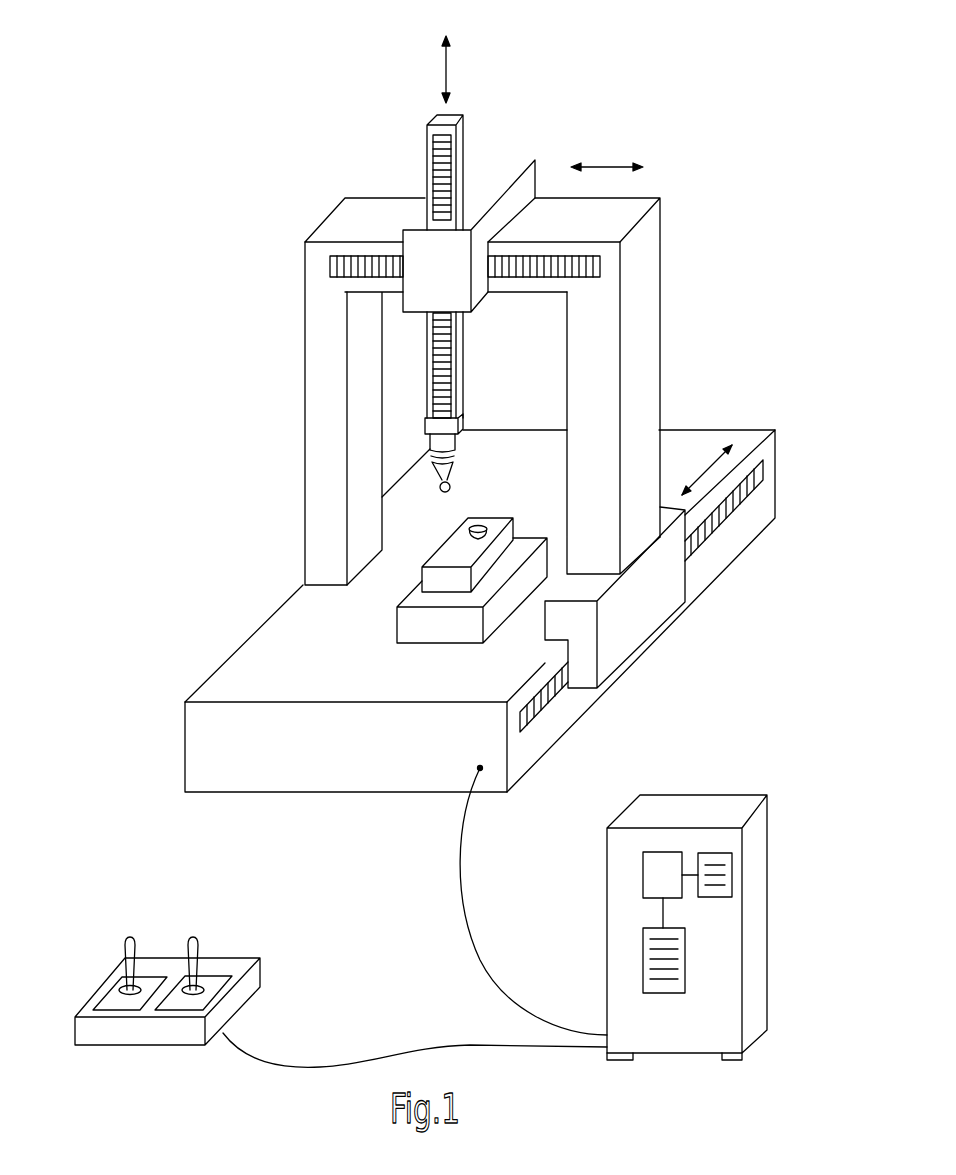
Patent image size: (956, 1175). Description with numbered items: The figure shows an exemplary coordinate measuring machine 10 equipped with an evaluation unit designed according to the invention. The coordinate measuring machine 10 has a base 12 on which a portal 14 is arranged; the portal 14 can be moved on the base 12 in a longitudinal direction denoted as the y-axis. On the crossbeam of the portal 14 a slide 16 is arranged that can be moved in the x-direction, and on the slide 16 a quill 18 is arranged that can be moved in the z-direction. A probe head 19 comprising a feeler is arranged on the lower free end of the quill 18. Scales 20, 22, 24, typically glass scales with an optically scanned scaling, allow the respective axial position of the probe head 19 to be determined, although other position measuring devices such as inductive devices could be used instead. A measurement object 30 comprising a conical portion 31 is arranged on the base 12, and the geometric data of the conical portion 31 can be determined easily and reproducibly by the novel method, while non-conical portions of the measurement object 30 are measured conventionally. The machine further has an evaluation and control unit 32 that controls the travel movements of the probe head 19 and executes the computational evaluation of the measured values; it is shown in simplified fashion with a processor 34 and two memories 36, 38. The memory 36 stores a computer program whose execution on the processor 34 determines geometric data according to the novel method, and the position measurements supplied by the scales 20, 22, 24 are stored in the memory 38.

The coordinate measuring machine 10 is at (685, 155).
The base 12 is at (260, 672).
The portal 14 is at (318, 387).
The slide 16 is at (420, 227).
The quill 18 is at (437, 120).
The probe head 19 is at (438, 478).
The scale 20 is at (723, 523).
The scale 22 is at (600, 263).
The scale 24 is at (447, 157).
The measurement object 30 is at (452, 557).
The conical portion 31 is at (483, 520).
The evaluation and control unit 32 is at (686, 815).
The processor 34 is at (643, 877).
The memory 36 is at (732, 877).
The memory 38 is at (685, 960).